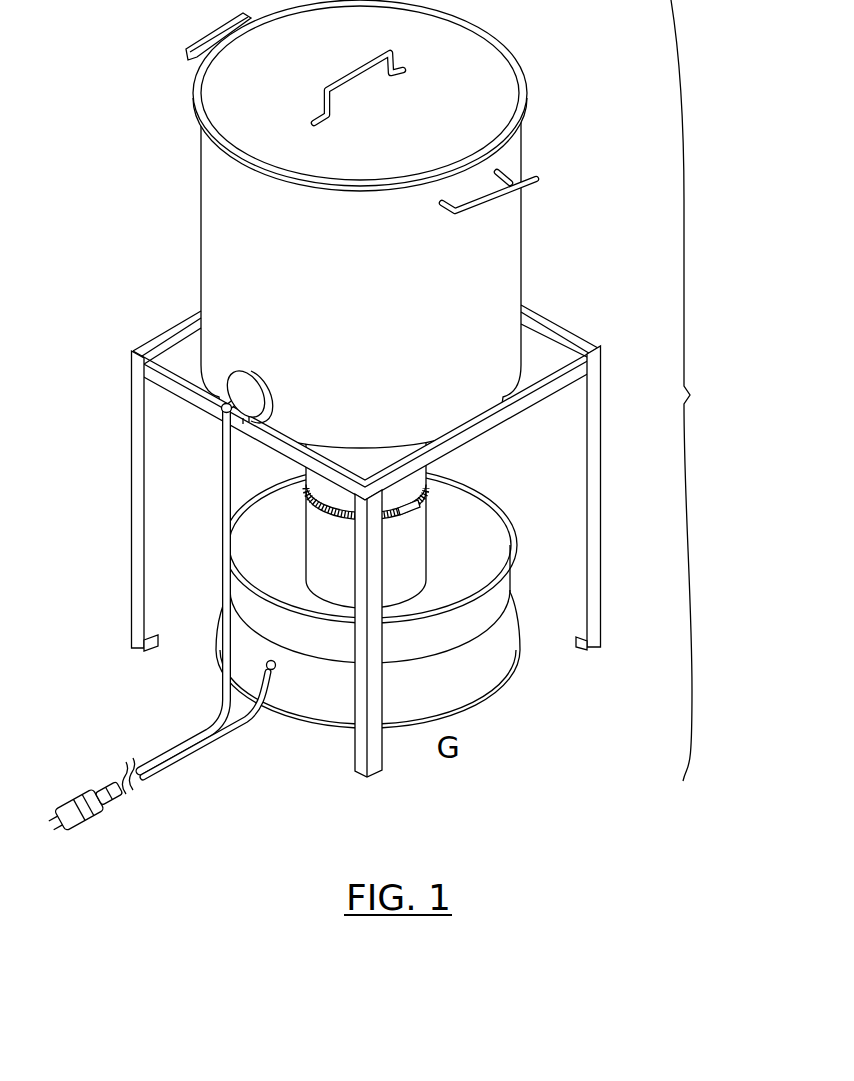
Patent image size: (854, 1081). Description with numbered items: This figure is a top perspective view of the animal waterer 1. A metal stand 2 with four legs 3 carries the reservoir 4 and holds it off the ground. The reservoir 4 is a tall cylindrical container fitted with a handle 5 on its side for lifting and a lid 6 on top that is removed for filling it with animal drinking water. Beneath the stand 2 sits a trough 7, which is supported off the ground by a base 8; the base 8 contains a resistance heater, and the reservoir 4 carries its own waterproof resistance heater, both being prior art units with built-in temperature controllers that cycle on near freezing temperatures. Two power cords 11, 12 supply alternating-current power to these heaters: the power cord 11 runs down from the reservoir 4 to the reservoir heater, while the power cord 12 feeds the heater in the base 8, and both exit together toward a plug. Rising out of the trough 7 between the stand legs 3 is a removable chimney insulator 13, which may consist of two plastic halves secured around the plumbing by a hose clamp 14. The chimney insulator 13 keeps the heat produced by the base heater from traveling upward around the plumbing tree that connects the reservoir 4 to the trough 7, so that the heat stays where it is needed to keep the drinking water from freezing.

The animal waterer 1 is at (694, 390).
The stand 2 is at (562, 337).
The legs 3 is at (595, 452).
The reservoir 4 is at (508, 242).
The handle 5 is at (536, 180).
The lid 6 is at (337, 83).
The trough 7 is at (474, 500).
The base 8 is at (463, 673).
The power cord 11 is at (224, 458).
The power cord 12 is at (240, 712).
The chimney insulator 13 is at (333, 566).
The hose clamp 14 is at (312, 508).